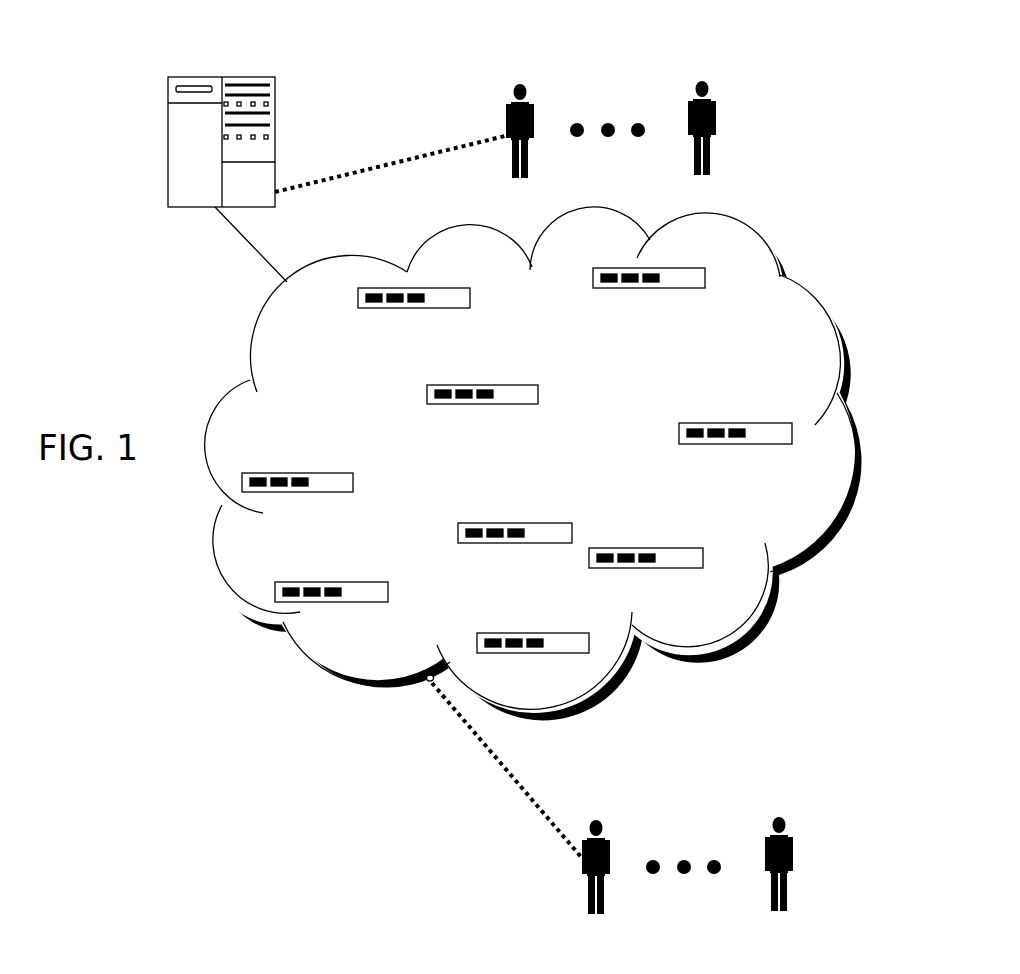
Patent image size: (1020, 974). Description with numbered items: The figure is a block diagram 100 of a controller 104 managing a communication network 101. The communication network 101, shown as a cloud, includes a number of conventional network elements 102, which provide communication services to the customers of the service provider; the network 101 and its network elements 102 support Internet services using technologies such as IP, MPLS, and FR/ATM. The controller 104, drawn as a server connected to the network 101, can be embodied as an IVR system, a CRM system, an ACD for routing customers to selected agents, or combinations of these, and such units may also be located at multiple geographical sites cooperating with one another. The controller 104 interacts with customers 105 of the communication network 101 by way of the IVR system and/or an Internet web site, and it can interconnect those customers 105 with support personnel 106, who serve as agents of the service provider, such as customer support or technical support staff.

The block diagram 100 is at (105, 408).
The communication network 101 is at (204, 550).
The network elements 102 is at (430, 308).
The controller 104 is at (275, 152).
The customers 105 is at (597, 817).
The support personnel 106 is at (519, 82).